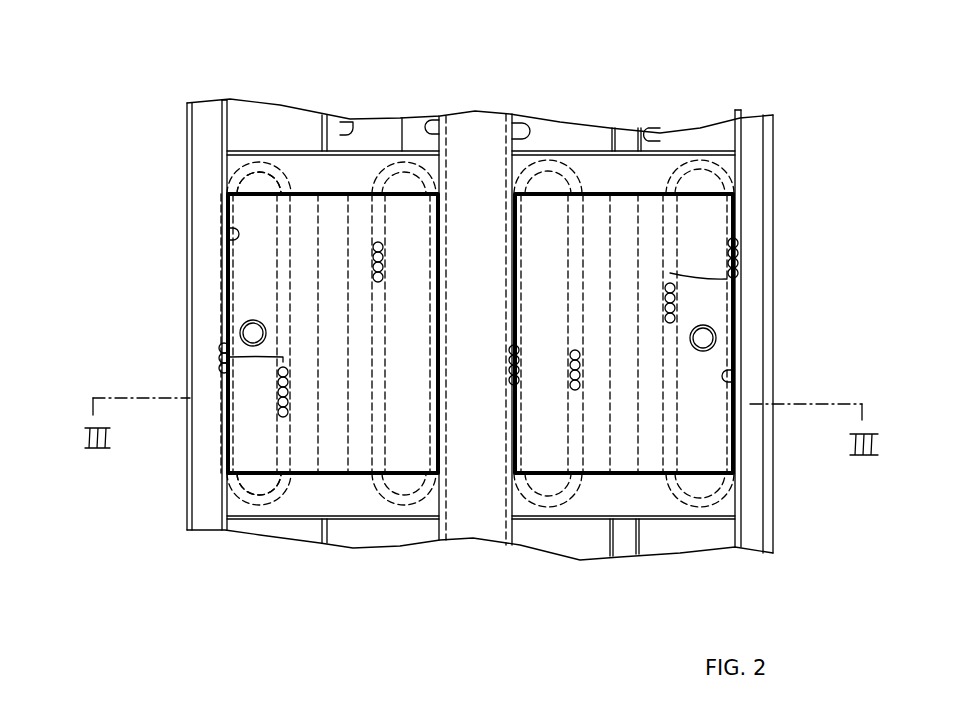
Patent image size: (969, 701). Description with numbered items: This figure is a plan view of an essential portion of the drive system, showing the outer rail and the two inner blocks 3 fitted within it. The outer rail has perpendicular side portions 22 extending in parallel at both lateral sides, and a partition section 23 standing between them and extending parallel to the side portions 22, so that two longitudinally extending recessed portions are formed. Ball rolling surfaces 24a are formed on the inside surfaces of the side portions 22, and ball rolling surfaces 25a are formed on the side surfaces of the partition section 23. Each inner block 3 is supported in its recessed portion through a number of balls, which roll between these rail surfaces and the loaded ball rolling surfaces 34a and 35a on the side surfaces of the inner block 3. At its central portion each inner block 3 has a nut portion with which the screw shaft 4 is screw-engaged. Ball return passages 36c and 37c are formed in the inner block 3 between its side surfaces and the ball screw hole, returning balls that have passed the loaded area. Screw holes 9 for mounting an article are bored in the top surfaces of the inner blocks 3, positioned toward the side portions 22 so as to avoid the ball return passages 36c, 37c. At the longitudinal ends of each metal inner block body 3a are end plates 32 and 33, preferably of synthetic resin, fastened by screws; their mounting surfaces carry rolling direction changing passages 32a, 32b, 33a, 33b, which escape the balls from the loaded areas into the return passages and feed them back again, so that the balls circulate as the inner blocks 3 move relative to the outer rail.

The perpendicular side portion 22 is at (765, 145).
The partition section 23 is at (192, 126).
The ball rolling surface 24a is at (229, 100).
The ball rolling surface 25a is at (422, 150).
The screw shaft 4 is at (352, 124).
The loaded ball rolling surface 35a is at (432, 190).
The inner block 3 is at (222, 405).
The inner block body 3a is at (245, 425).
The end plate 33 is at (230, 178).
The rolling direction changing passage 33a is at (262, 158).
The rolling direction changing passage 33b is at (259, 183).
The end plate 32 is at (238, 499).
The rolling direction changing passage 32a is at (240, 500).
The rolling direction changing passage 32b is at (259, 484).
The loaded ball rolling surface 34a is at (228, 238).
The screw hole 9 is at (244, 323).
The ball return passage 36c is at (222, 352).
The ball return passage 37c is at (373, 425).